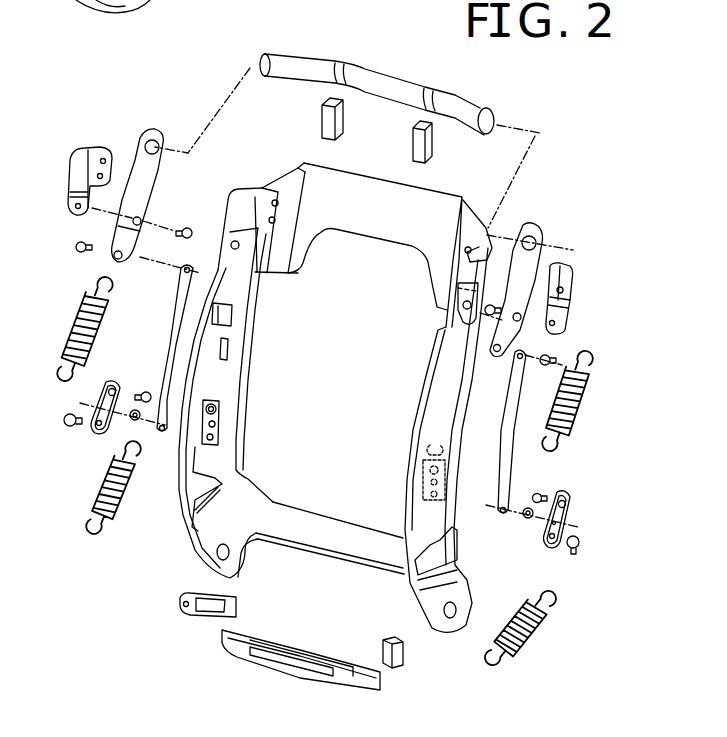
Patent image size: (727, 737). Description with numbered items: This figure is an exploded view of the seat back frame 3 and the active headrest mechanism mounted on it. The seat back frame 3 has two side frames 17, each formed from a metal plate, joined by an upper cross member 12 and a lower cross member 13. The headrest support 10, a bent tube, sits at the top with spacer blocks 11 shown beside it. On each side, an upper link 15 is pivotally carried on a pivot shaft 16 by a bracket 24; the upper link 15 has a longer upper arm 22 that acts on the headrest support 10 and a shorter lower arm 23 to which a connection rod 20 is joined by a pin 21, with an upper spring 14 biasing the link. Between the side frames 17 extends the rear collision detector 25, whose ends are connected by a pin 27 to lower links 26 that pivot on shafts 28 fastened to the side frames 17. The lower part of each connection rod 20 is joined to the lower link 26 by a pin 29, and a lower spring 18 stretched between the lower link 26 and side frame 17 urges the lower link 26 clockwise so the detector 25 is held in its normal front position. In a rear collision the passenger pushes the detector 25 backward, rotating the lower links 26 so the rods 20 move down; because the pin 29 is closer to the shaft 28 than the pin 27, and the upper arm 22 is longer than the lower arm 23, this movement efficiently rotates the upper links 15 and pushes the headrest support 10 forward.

The seat back frame 3 is at (271, 182).
The headrest support 10 is at (373, 73).
The spacer blocks 11 is at (337, 120).
The upper cross member 12 is at (373, 190).
The lower cross member 13 is at (320, 537).
The upper spring 14 is at (80, 318).
The upper link 15 is at (153, 182).
The pivot shaft 16 is at (188, 228).
The side frame 17 is at (232, 393).
The lower spring 18 is at (118, 482).
The connection rod 20 is at (167, 320).
The pin 21 is at (77, 247).
The upper arm 22 is at (141, 167).
The lower arm 23 is at (120, 232).
The bracket 24 is at (88, 152).
The rear collision detector 25 is at (293, 637).
The lower link 26 is at (97, 390).
The pin 27 is at (67, 430).
The shaft 28 is at (146, 390).
The pin 29 is at (133, 413).